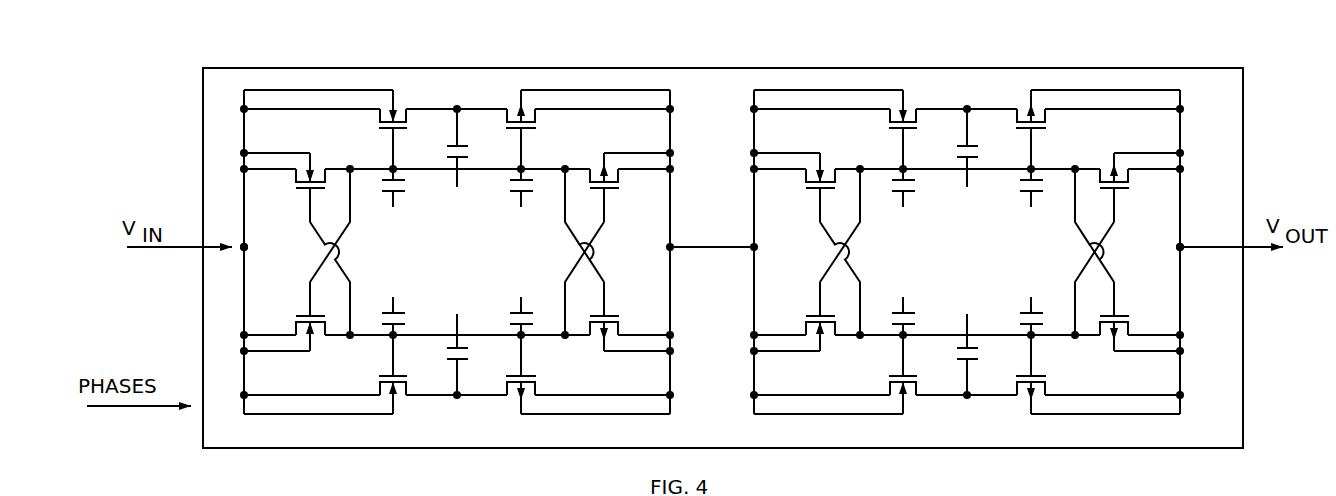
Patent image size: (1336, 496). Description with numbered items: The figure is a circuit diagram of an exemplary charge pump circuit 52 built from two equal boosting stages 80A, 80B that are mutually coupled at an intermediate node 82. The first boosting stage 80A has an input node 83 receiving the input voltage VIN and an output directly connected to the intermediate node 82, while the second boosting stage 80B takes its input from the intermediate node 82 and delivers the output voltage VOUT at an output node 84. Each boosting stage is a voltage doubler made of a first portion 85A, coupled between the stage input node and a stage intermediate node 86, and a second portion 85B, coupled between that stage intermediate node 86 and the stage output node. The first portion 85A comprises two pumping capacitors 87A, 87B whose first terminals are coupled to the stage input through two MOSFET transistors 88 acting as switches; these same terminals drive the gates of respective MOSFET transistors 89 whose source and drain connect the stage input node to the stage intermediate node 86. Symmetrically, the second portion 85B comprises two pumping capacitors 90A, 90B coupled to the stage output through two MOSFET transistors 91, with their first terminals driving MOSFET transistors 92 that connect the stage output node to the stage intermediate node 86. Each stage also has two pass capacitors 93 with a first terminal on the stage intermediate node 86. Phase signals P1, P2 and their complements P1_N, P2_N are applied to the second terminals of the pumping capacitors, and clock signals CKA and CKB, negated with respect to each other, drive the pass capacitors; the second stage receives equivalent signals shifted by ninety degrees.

The charge pump circuit 52 is at (710, 75).
The first boosting stage 80A is at (219, 89).
The second boosting stage 80B is at (1194, 101).
The intermediate node 82 is at (673, 246).
The input node 83 is at (241, 246).
The output node 84 is at (1183, 246).
The first portion 85A is at (328, 87).
The second portion 85B is at (605, 87).
The stage intermediate node 86 is at (458, 106).
The pumping capacitor 87A is at (405, 197).
The pumping capacitor 87B is at (406, 307).
The MOSFET transistor 88 is at (295, 192).
The MOSFET transistor 89 is at (378, 128).
The pumping capacitor 90A is at (502, 198).
The pumping capacitor 90B is at (503, 309).
The MOSFET transistor 91 is at (621, 196).
The MOSFET transistor 92 is at (544, 127).
The pass capacitor 93 is at (494, 138).